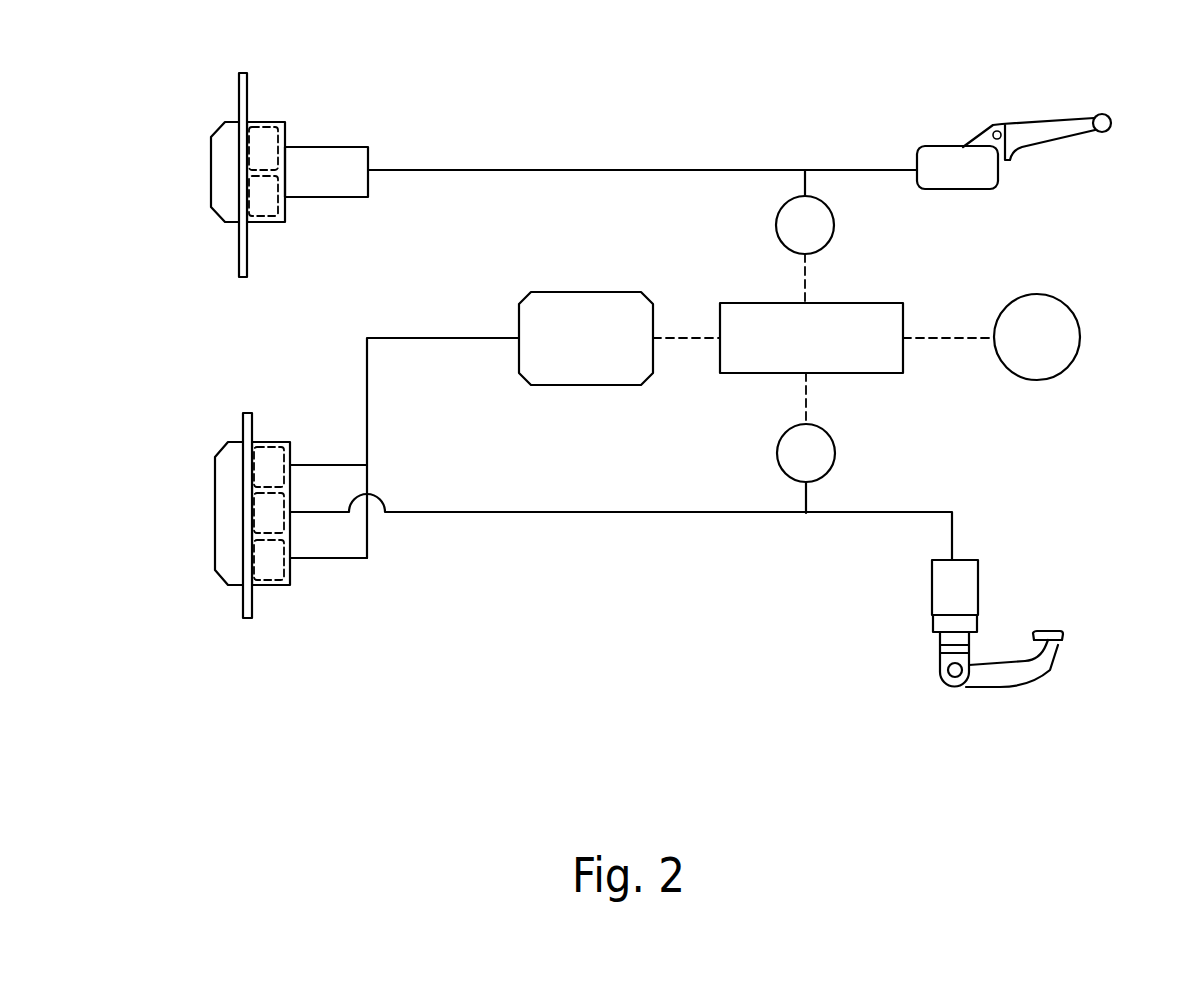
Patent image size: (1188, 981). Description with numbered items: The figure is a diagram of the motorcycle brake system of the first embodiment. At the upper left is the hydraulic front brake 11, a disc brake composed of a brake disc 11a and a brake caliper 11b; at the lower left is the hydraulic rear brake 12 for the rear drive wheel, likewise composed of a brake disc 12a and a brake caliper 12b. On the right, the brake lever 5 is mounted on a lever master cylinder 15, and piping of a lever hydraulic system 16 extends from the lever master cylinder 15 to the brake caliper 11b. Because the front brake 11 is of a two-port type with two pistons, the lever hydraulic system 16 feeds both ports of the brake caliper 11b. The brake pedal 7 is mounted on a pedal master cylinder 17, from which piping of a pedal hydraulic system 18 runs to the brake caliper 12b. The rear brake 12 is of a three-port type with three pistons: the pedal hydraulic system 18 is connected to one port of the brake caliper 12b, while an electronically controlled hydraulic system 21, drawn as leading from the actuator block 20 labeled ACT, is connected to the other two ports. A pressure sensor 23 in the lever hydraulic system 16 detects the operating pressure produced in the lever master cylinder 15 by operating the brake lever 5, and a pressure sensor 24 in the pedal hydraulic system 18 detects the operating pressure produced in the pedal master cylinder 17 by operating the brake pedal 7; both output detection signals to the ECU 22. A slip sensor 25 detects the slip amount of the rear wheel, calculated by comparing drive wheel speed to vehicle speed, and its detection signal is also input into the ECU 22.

The brake lever 5 is at (1064, 121).
The brake pedal 7 is at (1032, 673).
The front brake 11 is at (214, 95).
The brake disc 11a is at (240, 267).
The brake caliper 11b is at (280, 122).
The rear brake 12 is at (216, 425).
The brake disc 12a is at (243, 609).
The brake caliper 12b is at (282, 442).
The lever master cylinder 15 is at (942, 146).
The lever hydraulic system 16 is at (630, 169).
The pedal master cylinder 17 is at (978, 578).
The pedal hydraulic system 18 is at (667, 514).
The actuator 20 is at (571, 292).
The electronically controlled hydraulic system 21 is at (407, 337).
The ECU 22 is at (887, 303).
The pressure sensor 23 is at (835, 229).
The pressure sensor 24 is at (836, 458).
The slip sensor 25 is at (1080, 328).